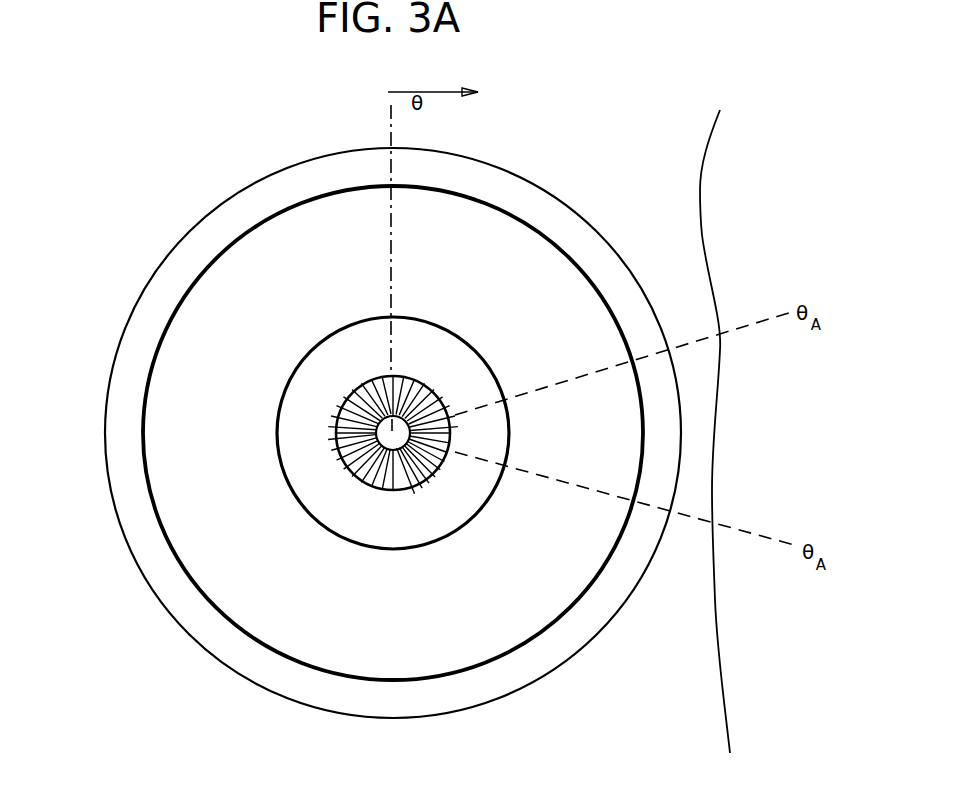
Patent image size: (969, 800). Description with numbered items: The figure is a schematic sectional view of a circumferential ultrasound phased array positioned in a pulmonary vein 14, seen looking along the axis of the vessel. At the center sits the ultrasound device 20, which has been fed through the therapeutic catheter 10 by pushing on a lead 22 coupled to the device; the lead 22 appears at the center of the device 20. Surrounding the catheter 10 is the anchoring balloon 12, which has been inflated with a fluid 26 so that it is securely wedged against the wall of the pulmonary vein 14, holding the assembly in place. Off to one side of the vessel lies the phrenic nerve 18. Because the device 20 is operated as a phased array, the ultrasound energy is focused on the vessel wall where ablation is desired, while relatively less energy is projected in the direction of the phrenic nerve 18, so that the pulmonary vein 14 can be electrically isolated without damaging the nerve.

The therapeutic catheter 10 is at (478, 357).
The anchoring balloon 12 is at (494, 213).
The pulmonary vein 14 is at (373, 178).
The phrenic nerve 18 is at (702, 235).
The ultrasound device 20 is at (345, 395).
The lead 22 is at (380, 443).
The fluid 26 is at (348, 262).